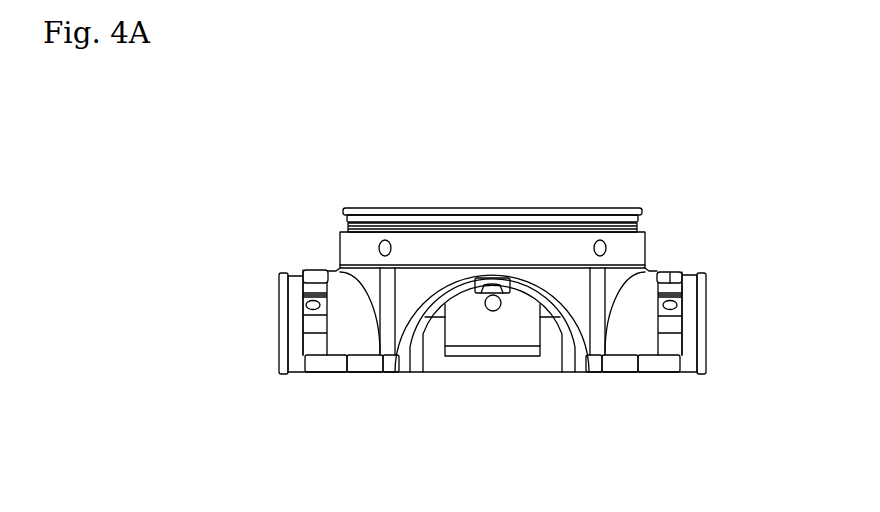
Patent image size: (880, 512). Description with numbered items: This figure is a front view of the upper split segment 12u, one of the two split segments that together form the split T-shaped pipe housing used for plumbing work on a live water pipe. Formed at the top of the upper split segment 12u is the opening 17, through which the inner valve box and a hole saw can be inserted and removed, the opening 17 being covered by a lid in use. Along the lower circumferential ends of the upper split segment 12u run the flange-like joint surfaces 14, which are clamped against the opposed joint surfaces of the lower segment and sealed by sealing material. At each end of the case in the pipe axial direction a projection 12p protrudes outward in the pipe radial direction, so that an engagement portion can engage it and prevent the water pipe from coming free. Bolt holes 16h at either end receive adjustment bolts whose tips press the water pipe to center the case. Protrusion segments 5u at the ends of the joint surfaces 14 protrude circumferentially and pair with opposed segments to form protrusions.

The opening 17 is at (452, 204).
The upper split segment 12u is at (318, 270).
The projection 12p is at (287, 273).
The bolt hole 16h is at (303, 302).
The protrusion segment 5u is at (284, 375).
The joint surface 14 is at (613, 373).